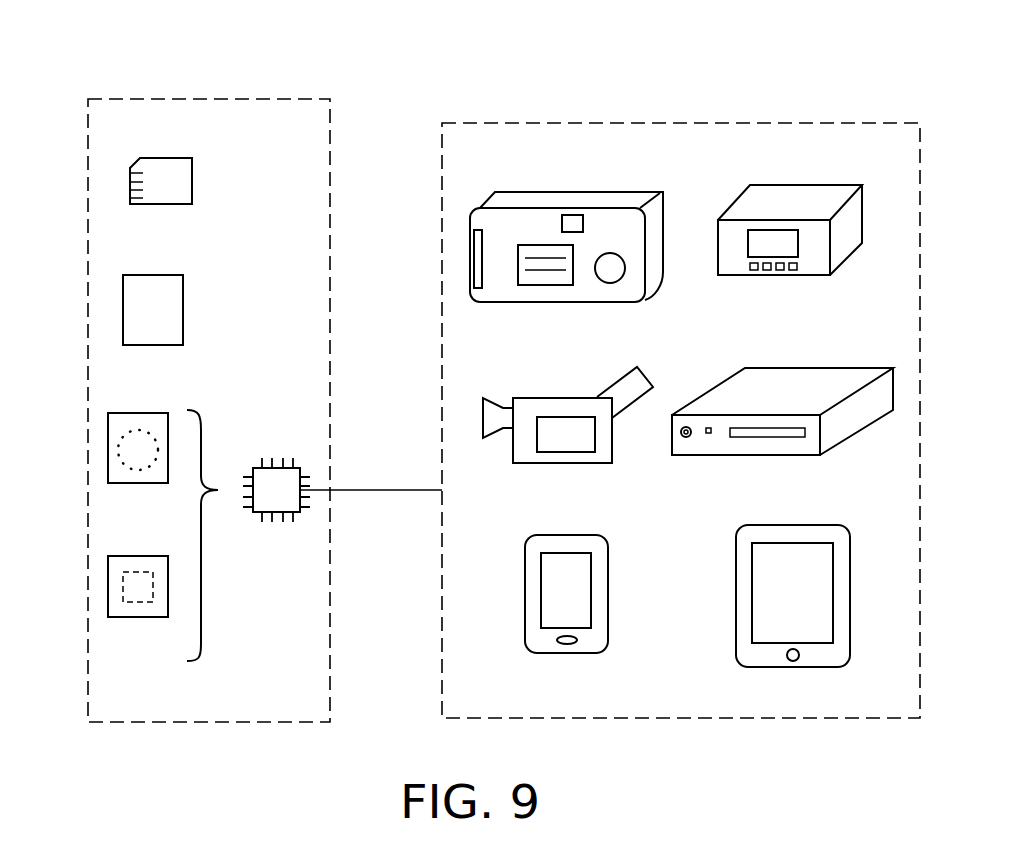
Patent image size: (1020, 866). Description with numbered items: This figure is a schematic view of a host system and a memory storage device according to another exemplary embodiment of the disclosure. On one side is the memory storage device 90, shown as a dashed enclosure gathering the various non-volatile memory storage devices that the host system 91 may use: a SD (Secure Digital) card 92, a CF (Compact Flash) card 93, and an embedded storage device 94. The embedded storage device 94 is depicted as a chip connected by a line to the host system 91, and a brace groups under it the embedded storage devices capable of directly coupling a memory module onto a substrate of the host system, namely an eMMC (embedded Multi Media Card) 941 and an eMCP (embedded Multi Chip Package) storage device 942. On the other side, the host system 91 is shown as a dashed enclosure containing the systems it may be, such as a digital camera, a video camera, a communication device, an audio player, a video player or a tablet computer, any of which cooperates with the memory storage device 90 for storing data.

The memory storage device 90 is at (200, 98).
The host system 91 is at (605, 122).
The SD card 92 is at (130, 190).
The CF card 93 is at (123, 312).
The embedded storage device 94 is at (280, 458).
The eMMC 941 is at (108, 450).
The eMCP storage device 942 is at (108, 588).